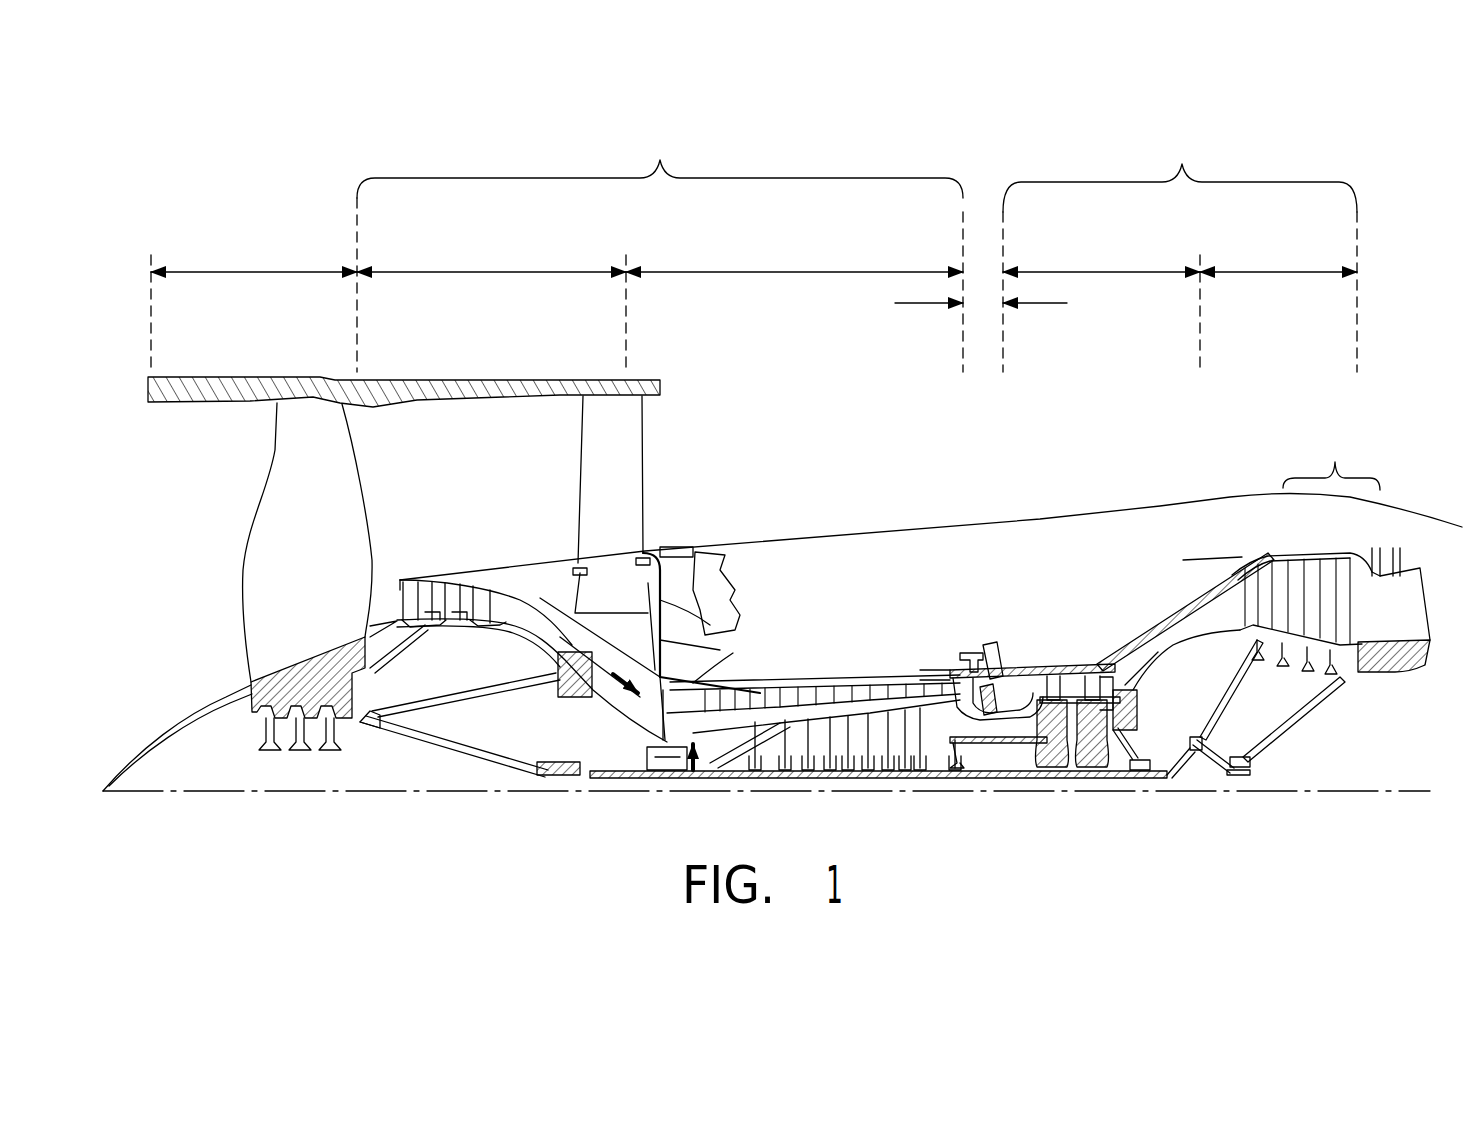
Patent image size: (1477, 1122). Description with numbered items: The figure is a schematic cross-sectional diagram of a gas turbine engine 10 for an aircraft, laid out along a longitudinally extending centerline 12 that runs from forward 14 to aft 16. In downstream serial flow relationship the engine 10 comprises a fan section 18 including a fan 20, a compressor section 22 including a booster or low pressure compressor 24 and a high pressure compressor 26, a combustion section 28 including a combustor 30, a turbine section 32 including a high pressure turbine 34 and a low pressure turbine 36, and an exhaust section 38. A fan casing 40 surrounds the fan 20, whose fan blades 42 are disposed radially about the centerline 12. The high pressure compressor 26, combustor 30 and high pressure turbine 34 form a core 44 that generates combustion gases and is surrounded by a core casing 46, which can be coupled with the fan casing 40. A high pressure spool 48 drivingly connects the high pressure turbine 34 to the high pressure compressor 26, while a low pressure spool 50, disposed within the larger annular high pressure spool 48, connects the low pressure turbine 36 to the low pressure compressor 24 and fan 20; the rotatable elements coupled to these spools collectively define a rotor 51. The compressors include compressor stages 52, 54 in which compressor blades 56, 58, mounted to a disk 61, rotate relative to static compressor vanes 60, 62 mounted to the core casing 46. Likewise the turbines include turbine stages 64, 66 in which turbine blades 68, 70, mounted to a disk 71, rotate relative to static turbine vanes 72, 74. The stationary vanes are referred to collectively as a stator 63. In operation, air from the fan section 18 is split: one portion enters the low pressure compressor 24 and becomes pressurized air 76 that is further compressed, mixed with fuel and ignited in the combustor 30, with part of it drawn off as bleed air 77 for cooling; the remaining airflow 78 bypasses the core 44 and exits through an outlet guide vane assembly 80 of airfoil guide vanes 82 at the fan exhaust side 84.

The gas turbine engine 10 is at (1372, 300).
The centerline 12 is at (232, 791).
The forward 14 is at (182, 516).
The aft 16 is at (1459, 612).
The fan section 18 is at (255, 272).
The fan 20 is at (230, 636).
The compressor section 22 is at (660, 160).
The low pressure compressor 24 is at (492, 272).
The high pressure compressor 26 is at (795, 272).
The combustion section 28 is at (895, 303).
The combustor 30 is at (1005, 668).
The turbine section 32 is at (1182, 164).
The HP turbine 34 is at (1100, 272).
The LP turbine 36 is at (1275, 272).
The exhaust section 38 is at (1425, 585).
The fan casing 40 is at (400, 378).
The fan blades 42 is at (330, 453).
The core 44 is at (922, 562).
The core casing 46 is at (1186, 603).
The HP spool 48 is at (973, 755).
The LP spool 50 is at (560, 775).
The rotor 51 is at (825, 787).
The compressor stages 52 is at (473, 557).
The compressor stages 54 is at (795, 668).
The compressor blades 56 is at (425, 575).
The compressor blades 58 is at (745, 700).
The static compressor vanes 60 is at (428, 575).
The disk 61 is at (455, 620).
The static compressor vanes 62 is at (695, 690).
The stator 63 is at (693, 770).
The turbine stages 64 is at (1063, 664).
The turbine stages 66 is at (1335, 462).
The turbine blades 68 is at (1088, 676).
The turbine blades 70 is at (1348, 560).
The disk 71 is at (1248, 648).
The static turbine vanes 72 is at (1050, 676).
The static turbine vanes 74 is at (1328, 560).
The pressurized air 76 is at (605, 696).
The bleed air 77 is at (822, 667).
The airflow 78 is at (688, 452).
The outlet guide vane assembly 80 is at (657, 514).
The airfoil guide vanes 82 is at (590, 491).
The fan exhaust side 84 is at (662, 428).